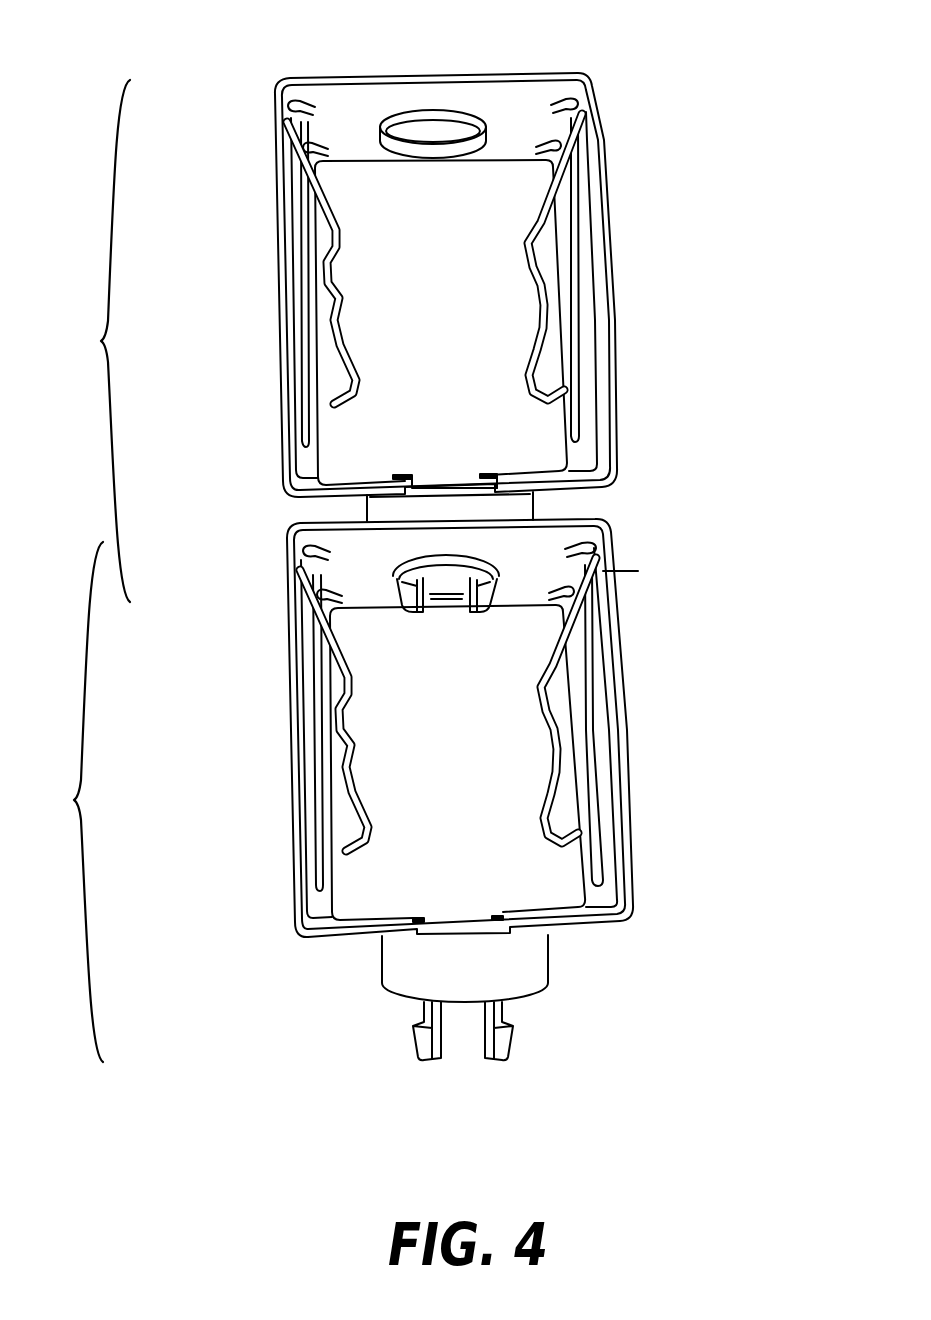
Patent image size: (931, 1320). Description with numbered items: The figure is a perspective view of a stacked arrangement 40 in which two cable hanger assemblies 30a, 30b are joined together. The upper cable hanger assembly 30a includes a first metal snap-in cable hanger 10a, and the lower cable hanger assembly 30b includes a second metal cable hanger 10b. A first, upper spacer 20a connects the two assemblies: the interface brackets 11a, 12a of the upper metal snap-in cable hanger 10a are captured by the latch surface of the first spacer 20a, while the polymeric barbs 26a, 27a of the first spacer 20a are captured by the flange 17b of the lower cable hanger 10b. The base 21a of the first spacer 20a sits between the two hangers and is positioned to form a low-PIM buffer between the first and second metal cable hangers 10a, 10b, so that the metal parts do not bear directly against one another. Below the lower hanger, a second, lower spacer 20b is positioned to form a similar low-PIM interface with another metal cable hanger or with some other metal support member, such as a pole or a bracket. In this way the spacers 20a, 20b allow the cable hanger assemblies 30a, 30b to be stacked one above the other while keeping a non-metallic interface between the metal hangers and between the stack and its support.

The fastener assembly 40 is at (753, 85).
The first (upper) metal snap-in cable hanger 10a is at (644, 285).
The second (lower) cable hanger 10b is at (659, 728).
The interface bracket 11a is at (413, 465).
The interface bracket 12a is at (490, 465).
The flange 17b is at (447, 557).
The first (upper) spacer 20a is at (557, 501).
The second (lower) spacer 20b is at (571, 972).
The base 21a is at (390, 505).
The polymeric barb 26a is at (421, 592).
The polymeric barb 27a is at (477, 596).
The cable hanger assembly 30a is at (80, 341).
The cable hanger assembly 30b is at (54, 802).